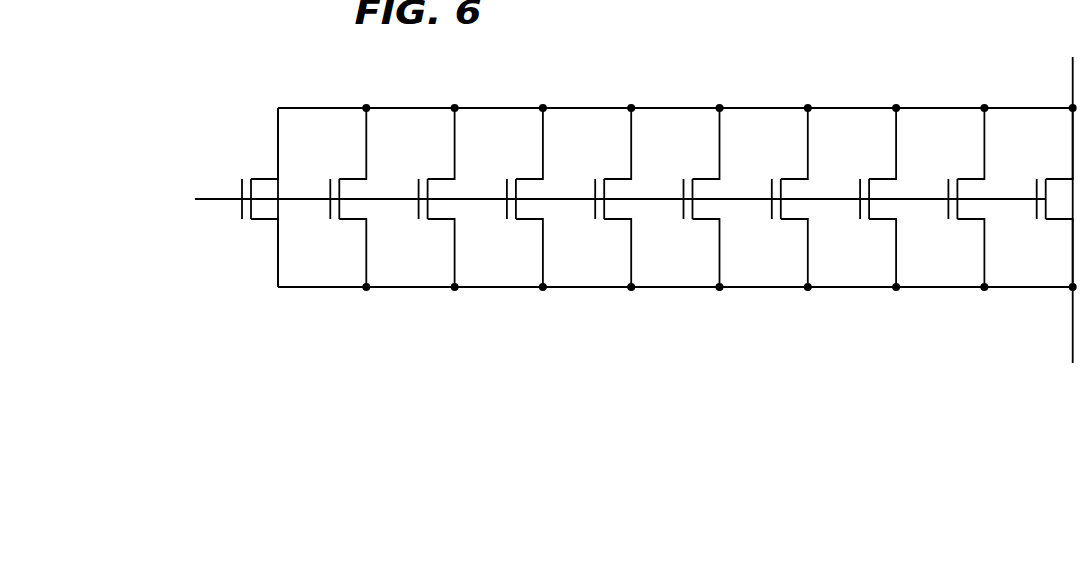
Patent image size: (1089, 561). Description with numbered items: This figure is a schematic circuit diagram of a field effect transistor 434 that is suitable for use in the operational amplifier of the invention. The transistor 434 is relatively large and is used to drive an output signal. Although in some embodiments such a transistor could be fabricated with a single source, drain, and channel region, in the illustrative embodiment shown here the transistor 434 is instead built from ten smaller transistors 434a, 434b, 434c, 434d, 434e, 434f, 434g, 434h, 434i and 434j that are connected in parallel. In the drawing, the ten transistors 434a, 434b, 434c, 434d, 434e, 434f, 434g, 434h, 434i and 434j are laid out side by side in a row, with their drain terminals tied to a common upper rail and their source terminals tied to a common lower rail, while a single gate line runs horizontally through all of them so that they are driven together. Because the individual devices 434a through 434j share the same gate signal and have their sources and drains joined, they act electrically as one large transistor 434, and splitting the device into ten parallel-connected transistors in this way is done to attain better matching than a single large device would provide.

The transistor 434 is at (258, 62).
The parallel-connected transistor 434a is at (263, 178).
The parallel-connected transistor 434b is at (351, 178).
The parallel-connected transistor 434c is at (440, 178).
The parallel-connected transistor 434d is at (528, 178).
The parallel-connected transistor 434e is at (616, 178).
The parallel-connected transistor 434f is at (704, 178).
The parallel-connected transistor 434g is at (793, 178).
The parallel-connected transistor 434h is at (881, 178).
The parallel-connected transistor 434i is at (969, 178).
The parallel-connected transistor 434j is at (1058, 178).